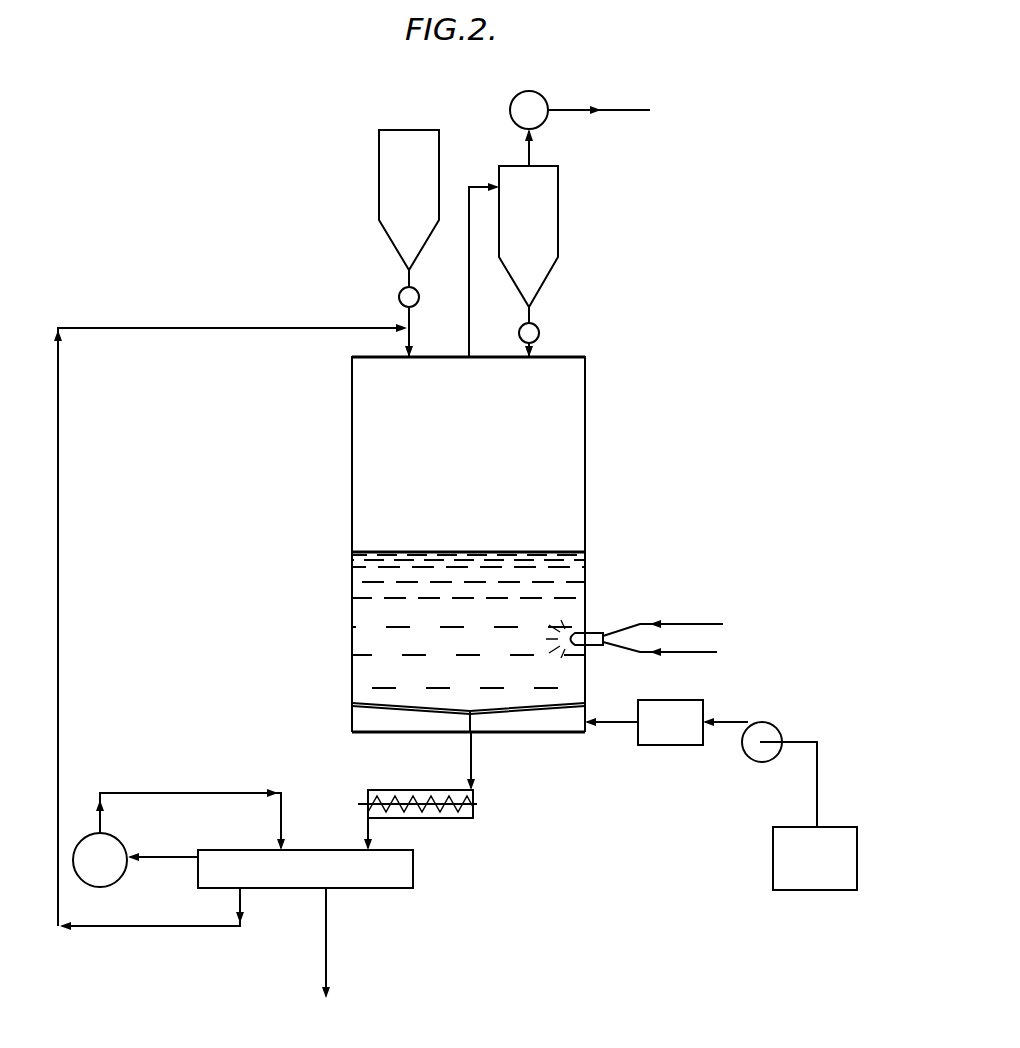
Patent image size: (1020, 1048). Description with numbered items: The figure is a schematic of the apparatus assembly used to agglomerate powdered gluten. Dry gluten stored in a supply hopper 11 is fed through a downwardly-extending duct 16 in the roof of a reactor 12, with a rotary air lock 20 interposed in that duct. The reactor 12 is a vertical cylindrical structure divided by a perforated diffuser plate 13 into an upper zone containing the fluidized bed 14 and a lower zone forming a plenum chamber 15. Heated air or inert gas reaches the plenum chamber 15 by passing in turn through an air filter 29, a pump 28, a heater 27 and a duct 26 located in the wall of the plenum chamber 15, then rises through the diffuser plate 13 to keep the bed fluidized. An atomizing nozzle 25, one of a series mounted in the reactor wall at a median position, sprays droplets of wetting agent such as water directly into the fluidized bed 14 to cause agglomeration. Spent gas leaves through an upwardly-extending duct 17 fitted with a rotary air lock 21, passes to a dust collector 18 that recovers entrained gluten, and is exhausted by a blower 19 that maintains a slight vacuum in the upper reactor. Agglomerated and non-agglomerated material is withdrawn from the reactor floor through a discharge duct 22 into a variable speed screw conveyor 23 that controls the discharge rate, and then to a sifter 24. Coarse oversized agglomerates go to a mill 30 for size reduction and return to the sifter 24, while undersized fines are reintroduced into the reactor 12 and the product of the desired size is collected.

The supply hopper 11 is at (392, 208).
The reactor 12 is at (386, 460).
The perforated diffuser plate 13 is at (353, 707).
The fluidized bed 14 is at (574, 590).
The plenum chamber 15 is at (572, 727).
The downwardly-extending duct 16 is at (411, 337).
The upwardly-extending duct 17 is at (470, 338).
The dust collector 18 is at (537, 280).
The blower 19 is at (513, 108).
The rotary air lock 20 is at (399, 294).
The rotary air lock 21 is at (539, 336).
The discharge duct 22 is at (471, 767).
The screw conveyor 23 is at (442, 817).
The sifter 24 is at (413, 873).
The atomizing nozzle 25 is at (580, 628).
The duct 26 is at (611, 740).
The heater 27 is at (703, 737).
The pump 28 is at (773, 757).
The air filter 29 is at (773, 883).
The mill 30 is at (122, 850).